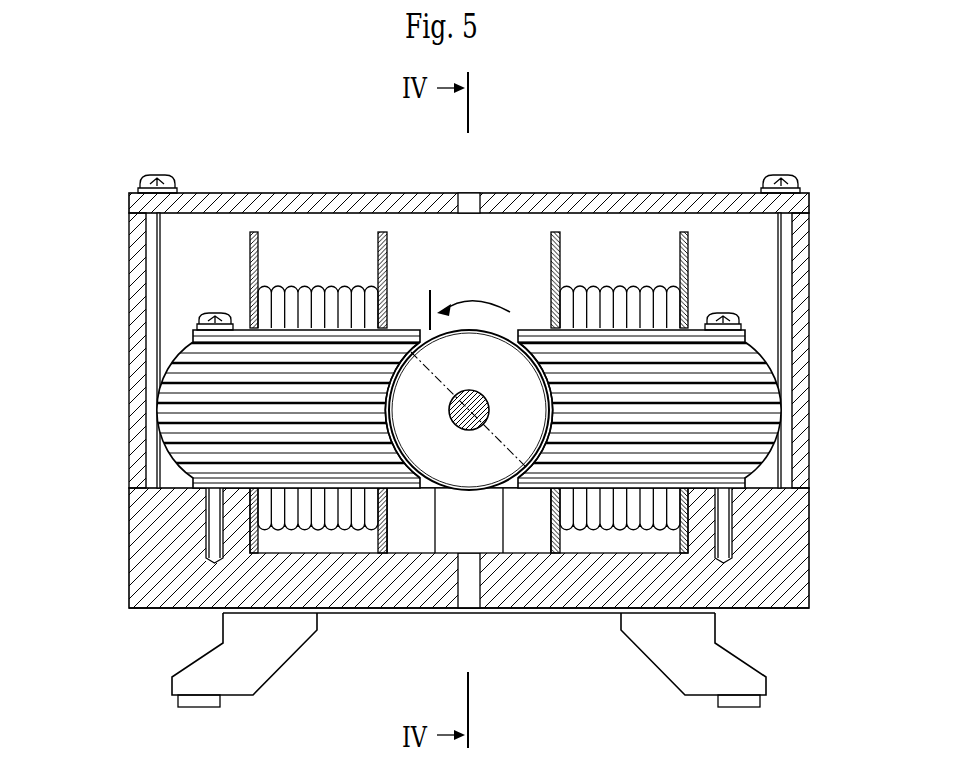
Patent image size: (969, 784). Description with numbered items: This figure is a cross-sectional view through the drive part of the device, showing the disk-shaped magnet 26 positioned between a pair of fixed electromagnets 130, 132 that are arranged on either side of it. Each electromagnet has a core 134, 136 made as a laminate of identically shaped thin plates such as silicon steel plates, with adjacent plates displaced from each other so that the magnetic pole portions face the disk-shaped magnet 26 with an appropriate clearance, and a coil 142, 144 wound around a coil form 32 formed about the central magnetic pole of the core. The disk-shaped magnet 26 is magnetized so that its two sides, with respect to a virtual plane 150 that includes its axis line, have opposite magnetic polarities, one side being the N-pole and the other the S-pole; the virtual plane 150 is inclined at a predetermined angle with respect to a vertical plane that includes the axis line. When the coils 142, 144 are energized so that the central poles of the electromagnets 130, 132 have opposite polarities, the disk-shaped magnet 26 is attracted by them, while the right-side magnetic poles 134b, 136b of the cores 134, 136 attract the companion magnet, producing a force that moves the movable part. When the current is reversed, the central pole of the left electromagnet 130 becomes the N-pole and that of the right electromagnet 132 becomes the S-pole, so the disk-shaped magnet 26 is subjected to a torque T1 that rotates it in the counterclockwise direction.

The disk-shaped magnet 26 is at (468, 507).
The coil form 32 is at (546, 265).
The electromagnet 130 is at (287, 309).
The electromagnet 132 is at (644, 330).
The core 134 is at (236, 304).
The right-side magnetic pole 134b is at (403, 345).
The core 136 is at (696, 271).
The right-side magnetic pole 136b is at (537, 347).
The coil 142 is at (270, 298).
The coil 144 is at (645, 288).
The virtual plane 150 is at (497, 443).
The torque T1 is at (481, 303).